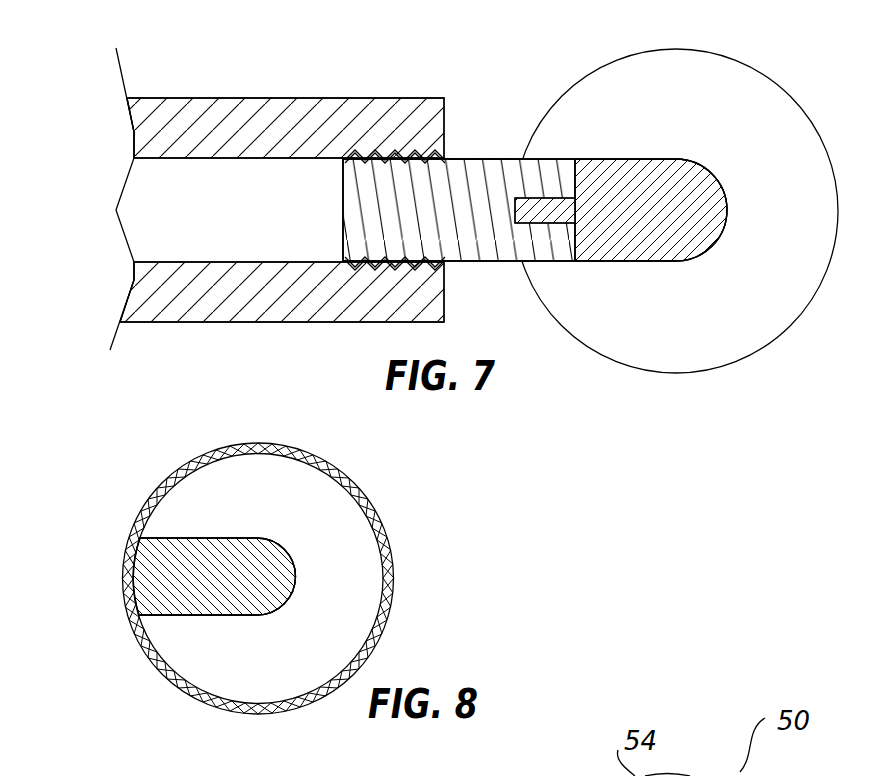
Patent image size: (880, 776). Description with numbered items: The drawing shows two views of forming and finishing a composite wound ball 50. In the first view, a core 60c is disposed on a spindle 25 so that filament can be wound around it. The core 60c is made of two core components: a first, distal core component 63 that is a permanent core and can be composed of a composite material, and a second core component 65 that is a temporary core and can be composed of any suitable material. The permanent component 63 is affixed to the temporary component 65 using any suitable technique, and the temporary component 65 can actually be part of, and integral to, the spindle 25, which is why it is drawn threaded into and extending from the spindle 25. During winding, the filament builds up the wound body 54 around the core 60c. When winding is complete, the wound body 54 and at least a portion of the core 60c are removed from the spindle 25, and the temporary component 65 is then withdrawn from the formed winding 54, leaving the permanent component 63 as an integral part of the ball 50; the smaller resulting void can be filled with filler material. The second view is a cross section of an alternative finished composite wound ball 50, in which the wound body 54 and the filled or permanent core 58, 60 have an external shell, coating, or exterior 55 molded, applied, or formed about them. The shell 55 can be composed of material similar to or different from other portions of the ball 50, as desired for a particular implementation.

In FIG. 7, the spindle 25 is at (233, 98).
In FIG. 7, the composite ball 50 is at (803, 66).
In FIG. 8, the composite ball 50 is at (407, 523).
In FIG. 7, the wound body 54 is at (685, 77).
In FIG. 8, the wound body 54 is at (273, 482).
In FIG. 8, the shell 55 is at (248, 713).
In FIG. 8, the filled core 58 is at (134, 612).
In FIG. 8, the permanent core 60 is at (163, 596).
In FIG. 7, the core 60c is at (492, 98).
In FIG. 7, the first distal core component 63 is at (673, 265).
In FIG. 7, the second core component 65 is at (487, 267).